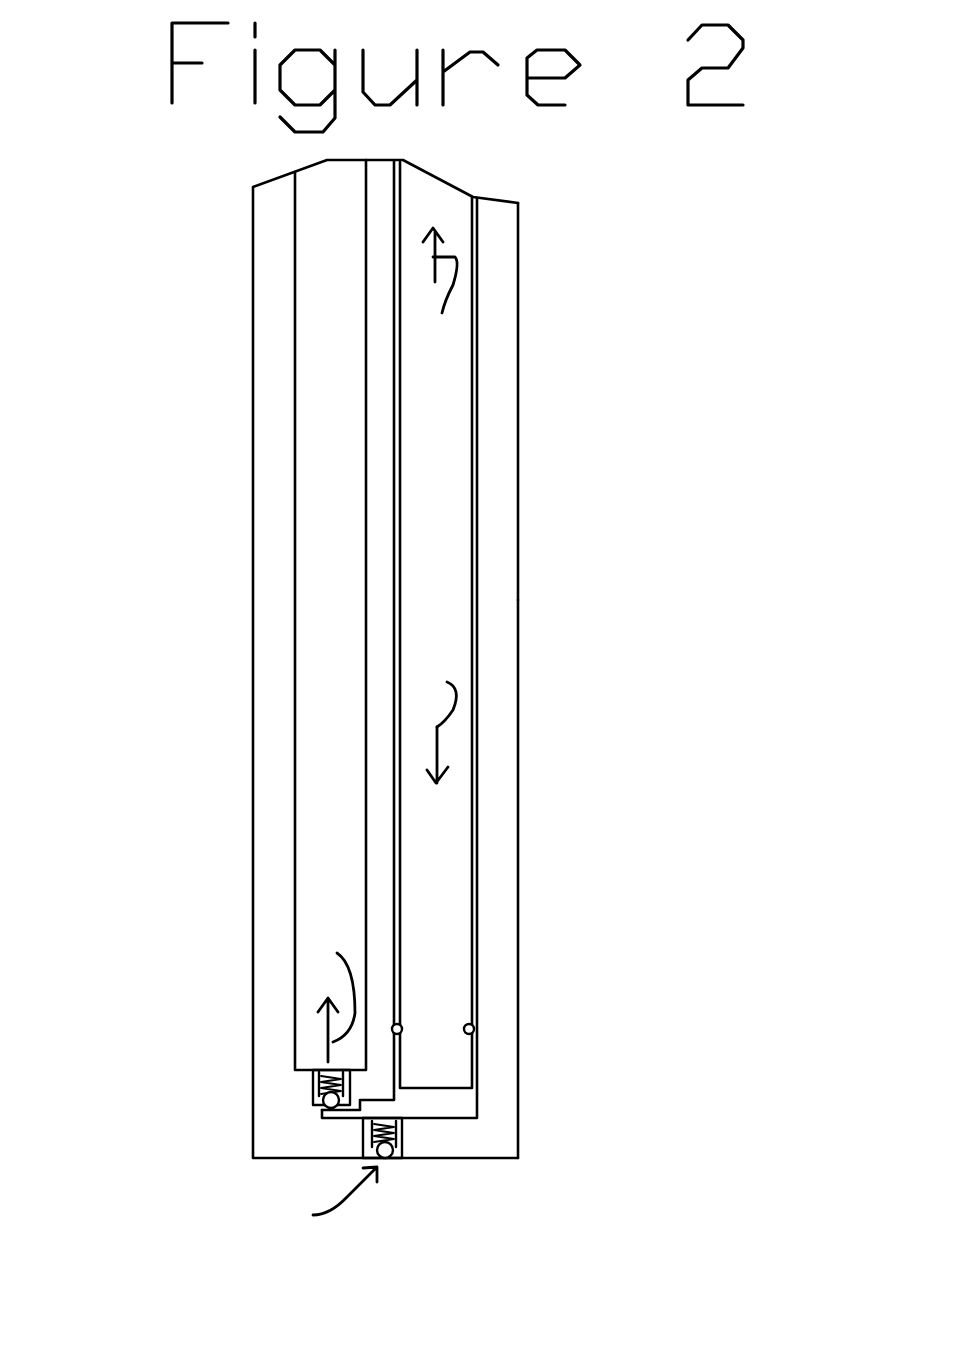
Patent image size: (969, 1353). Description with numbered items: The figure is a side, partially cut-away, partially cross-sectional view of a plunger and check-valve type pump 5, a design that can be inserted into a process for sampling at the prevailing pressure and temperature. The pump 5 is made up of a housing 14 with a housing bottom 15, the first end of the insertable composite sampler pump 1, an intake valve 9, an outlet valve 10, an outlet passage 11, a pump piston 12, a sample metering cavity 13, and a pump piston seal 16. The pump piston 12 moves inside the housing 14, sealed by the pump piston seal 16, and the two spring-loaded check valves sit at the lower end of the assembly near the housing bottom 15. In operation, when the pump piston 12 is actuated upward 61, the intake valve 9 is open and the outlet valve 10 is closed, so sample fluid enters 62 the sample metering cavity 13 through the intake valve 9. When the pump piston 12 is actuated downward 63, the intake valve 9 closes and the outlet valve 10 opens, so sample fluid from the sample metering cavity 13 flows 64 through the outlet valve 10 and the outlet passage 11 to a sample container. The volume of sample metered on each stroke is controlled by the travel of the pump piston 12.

The insertable composite sampler pump 1 is at (528, 1088).
The pump 5 is at (532, 458).
The intake valve 9 is at (388, 1160).
The outlet valve 10 is at (317, 1098).
The outlet passage 11 is at (327, 892).
The pump piston 12 is at (443, 672).
The sample metering cavity 13 is at (398, 1095).
The housing 14 is at (498, 317).
The housing bottom 15 is at (327, 1120).
The pump piston seal 16 is at (472, 1023).
The upward actuation 61 is at (438, 289).
The sample fluid entry 62 is at (325, 1192).
The downward actuation 63 is at (432, 730).
The sample fluid outflow 64 is at (327, 1003).